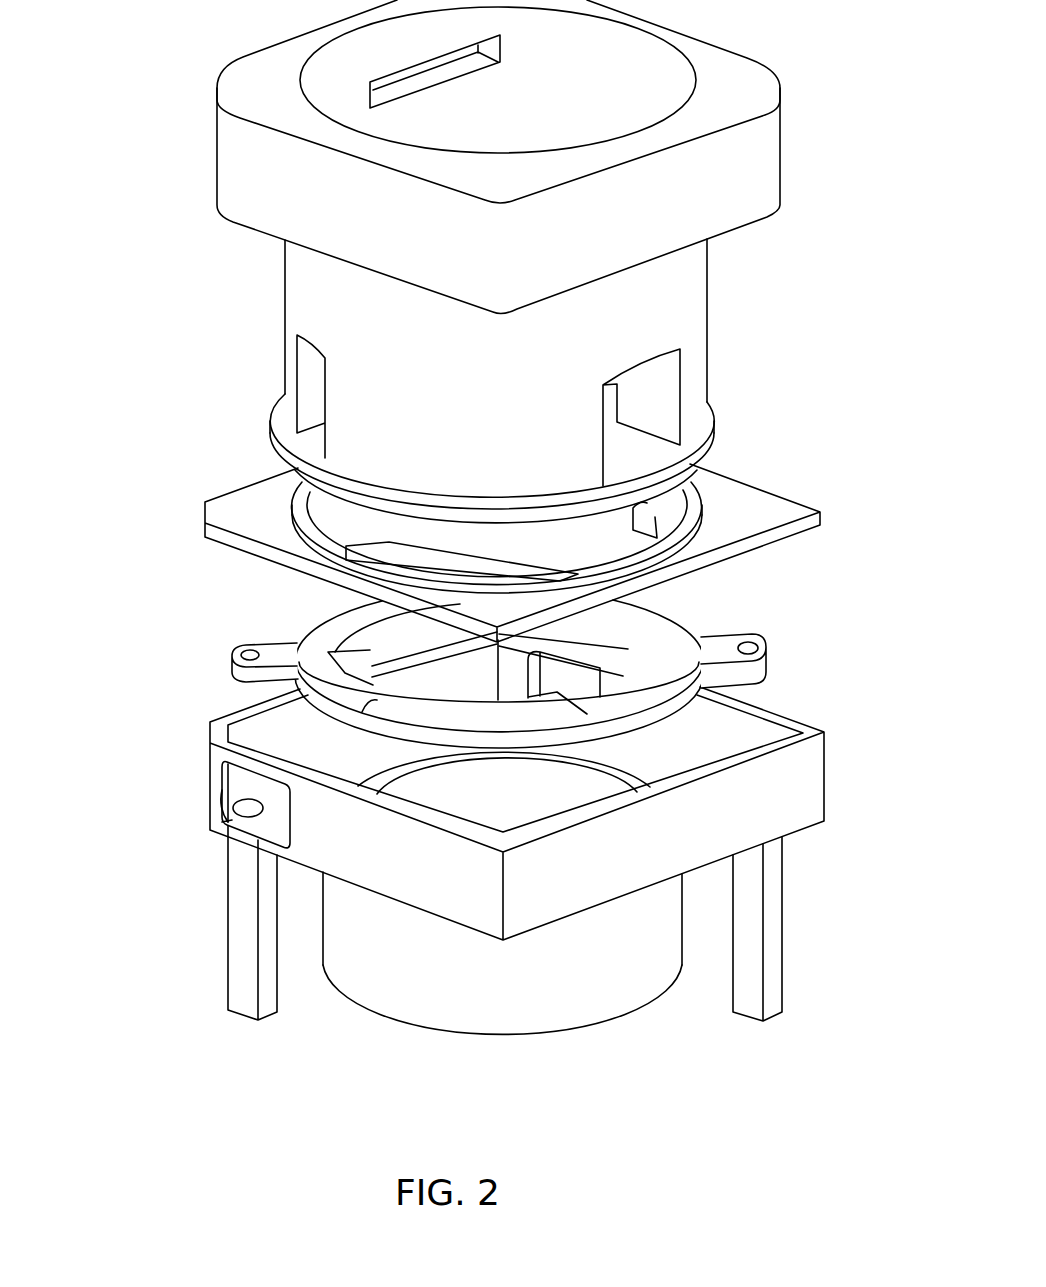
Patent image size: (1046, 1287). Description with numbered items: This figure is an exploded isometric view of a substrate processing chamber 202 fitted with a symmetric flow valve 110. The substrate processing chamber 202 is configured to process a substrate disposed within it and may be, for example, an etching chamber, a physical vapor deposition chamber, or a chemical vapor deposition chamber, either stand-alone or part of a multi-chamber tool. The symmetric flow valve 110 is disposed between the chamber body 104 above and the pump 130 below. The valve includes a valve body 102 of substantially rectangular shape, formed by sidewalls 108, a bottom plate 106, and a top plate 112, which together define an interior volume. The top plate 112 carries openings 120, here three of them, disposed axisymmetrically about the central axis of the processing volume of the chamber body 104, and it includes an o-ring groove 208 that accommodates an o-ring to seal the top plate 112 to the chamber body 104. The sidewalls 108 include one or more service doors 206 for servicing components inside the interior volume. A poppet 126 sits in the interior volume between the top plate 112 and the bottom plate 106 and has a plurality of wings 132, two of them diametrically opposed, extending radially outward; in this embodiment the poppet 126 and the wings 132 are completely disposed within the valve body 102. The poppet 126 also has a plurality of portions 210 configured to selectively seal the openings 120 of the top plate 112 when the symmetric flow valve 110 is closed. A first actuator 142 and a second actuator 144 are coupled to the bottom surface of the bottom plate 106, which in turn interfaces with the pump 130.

The valve body 102 is at (502, 827).
The chamber body 104 is at (284, 280).
The bottom plate 106 is at (283, 834).
The sidewalls 108 is at (826, 777).
The symmetric flow valve 110 is at (492, 873).
The top plate 112 is at (223, 500).
The openings 120 is at (477, 560).
The poppet 126 is at (685, 623).
The pump 130 is at (640, 1007).
The wings 132 is at (248, 643).
The first actuator 142 is at (228, 934).
The second actuator 144 is at (784, 924).
The substrate processing chamber 202 is at (170, 122).
The service doors 206 is at (222, 820).
The o-ring groove 208 is at (703, 500).
The portions 210 is at (367, 637).